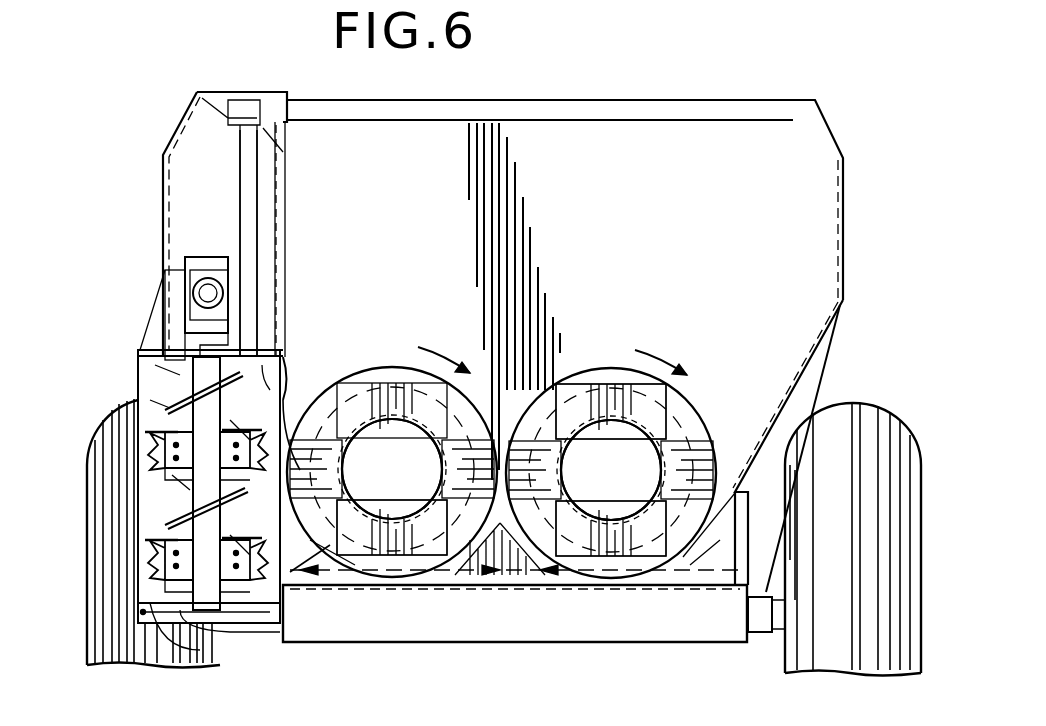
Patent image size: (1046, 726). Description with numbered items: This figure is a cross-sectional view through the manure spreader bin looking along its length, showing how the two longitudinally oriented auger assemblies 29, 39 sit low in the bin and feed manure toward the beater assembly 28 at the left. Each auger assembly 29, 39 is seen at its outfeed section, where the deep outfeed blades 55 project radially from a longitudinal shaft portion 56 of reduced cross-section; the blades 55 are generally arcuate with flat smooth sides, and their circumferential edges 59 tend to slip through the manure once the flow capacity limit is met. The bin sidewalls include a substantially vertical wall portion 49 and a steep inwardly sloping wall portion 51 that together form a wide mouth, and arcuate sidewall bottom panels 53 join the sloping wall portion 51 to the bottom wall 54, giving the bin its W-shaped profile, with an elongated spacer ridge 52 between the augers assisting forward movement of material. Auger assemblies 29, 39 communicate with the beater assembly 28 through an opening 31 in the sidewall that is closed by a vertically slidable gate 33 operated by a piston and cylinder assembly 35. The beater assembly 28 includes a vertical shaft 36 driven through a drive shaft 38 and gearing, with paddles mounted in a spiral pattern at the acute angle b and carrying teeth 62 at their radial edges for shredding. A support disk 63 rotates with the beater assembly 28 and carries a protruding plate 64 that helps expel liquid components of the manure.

The beater assembly 28 is at (160, 400).
The auger assembly 29 is at (707, 418).
The opening 31 is at (300, 385).
The gate 33 is at (290, 365).
The piston and cylinder assembly 35 is at (240, 190).
The vertical shaft 36 is at (205, 370).
The drive shaft 38 is at (190, 290).
The auger assembly 39 is at (326, 547).
The substantially vertical wall portion 49 is at (843, 245).
The inwardly sloping wall portion 51 is at (812, 362).
The spacer ridge 52 is at (517, 585).
The sidewall bottom panel 53 is at (350, 565).
The bottom wall 54 is at (610, 585).
The outfeed blade 55 is at (410, 530).
The longitudinal shaft portion 56 is at (438, 490).
The circumferential edge 59 is at (668, 570).
The teeth 62 is at (200, 650).
The support disk 63 is at (235, 628).
The protruding plate 64 is at (270, 605).